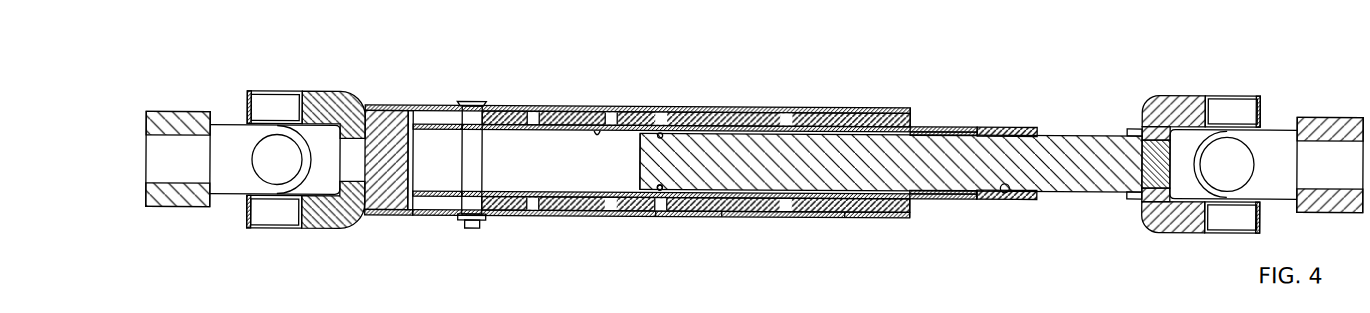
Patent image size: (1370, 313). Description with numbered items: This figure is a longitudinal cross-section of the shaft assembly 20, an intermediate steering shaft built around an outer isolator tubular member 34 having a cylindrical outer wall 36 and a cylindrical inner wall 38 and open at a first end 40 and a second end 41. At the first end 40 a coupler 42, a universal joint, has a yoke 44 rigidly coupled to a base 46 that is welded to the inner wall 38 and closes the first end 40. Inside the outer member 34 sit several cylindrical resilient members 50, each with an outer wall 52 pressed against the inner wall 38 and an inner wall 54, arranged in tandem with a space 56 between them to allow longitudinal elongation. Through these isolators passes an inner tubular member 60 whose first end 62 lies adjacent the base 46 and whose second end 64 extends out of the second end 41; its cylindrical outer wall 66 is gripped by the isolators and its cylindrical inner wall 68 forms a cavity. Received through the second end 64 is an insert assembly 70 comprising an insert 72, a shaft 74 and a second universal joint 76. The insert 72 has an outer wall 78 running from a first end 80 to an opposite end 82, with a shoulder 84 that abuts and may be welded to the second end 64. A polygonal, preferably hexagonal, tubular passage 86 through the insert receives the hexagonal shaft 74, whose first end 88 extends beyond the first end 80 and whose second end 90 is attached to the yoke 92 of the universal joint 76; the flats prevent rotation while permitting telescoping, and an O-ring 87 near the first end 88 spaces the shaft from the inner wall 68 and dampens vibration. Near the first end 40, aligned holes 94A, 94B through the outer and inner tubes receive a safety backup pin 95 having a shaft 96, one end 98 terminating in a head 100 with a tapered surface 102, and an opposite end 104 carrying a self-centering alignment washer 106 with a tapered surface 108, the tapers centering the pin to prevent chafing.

The shaft assembly 20 is at (845, 46).
The outer isolator tubular member 34 is at (715, 170).
The cylindrical outer wall 36 is at (680, 107).
The cylindrical inner wall 38 is at (755, 115).
The first end 40 is at (327, 172).
The second end 41 is at (910, 105).
The coupler 42 is at (222, 88).
The yoke 44 is at (318, 91).
The base 46 is at (390, 125).
The resilient members 50 is at (847, 211).
The outer wall 52 is at (556, 198).
The inner wall 54 is at (620, 210).
The space 56 is at (640, 112).
The inner tubular member 60 is at (428, 126).
The first end 62 is at (370, 215).
The second end 64 is at (973, 194).
The cylindrical outer wall 66 is at (566, 118).
The cylindrical inner wall 68 is at (603, 110).
The insert assembly 70 is at (875, 149).
The insert 72 is at (1028, 128).
The shaft 74 is at (1090, 134).
The second universal joint 76 is at (1220, 163).
The outer wall 78 is at (930, 197).
The first end 80 is at (810, 130).
The opposite end 82 is at (1040, 194).
The shoulder 84 is at (975, 124).
The tubular passage 86 is at (1007, 196).
The O-ring 87 is at (655, 215).
The first end 88 is at (642, 134).
The second end 90 is at (1143, 210).
The yoke 92 is at (1172, 223).
The holes 94A is at (514, 84).
The holes 94B is at (436, 243).
The safety backup pin 95 is at (473, 164).
The shaft 96 is at (474, 150).
The end 98 is at (514, 62).
The head 100 is at (514, 75).
The tapered surface 102 is at (484, 103).
The opposite end 104 is at (456, 266).
The self-centering alignment washer 106 is at (460, 221).
The tapered surface 108 is at (483, 219).